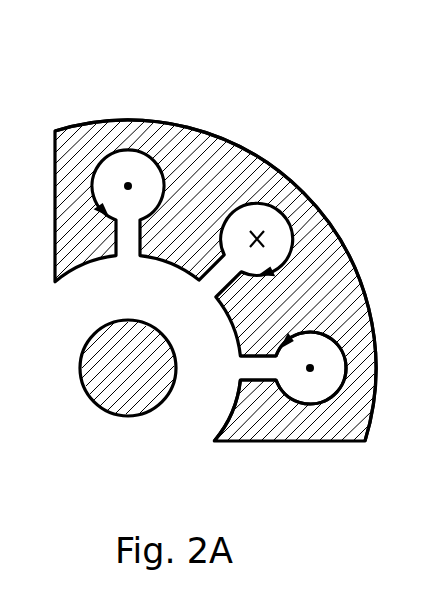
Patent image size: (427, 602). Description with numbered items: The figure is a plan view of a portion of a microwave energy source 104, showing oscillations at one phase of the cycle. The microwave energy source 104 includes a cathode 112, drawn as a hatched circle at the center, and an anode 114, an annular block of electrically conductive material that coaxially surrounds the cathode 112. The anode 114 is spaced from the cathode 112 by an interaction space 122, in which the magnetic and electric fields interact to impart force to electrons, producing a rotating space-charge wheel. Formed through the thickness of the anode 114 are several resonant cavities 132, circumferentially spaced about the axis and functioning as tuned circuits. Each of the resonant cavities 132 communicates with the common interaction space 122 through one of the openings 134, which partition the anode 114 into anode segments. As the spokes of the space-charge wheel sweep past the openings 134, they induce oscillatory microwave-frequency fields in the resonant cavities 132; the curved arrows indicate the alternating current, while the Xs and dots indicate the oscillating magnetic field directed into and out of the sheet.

The microwave energy source 104 is at (121, 89).
The anode 114 is at (222, 128).
The cathode 112 is at (120, 415).
The interaction space 122 is at (190, 418).
The openings 134 is at (255, 382).
The resonant cavities 132 is at (318, 401).